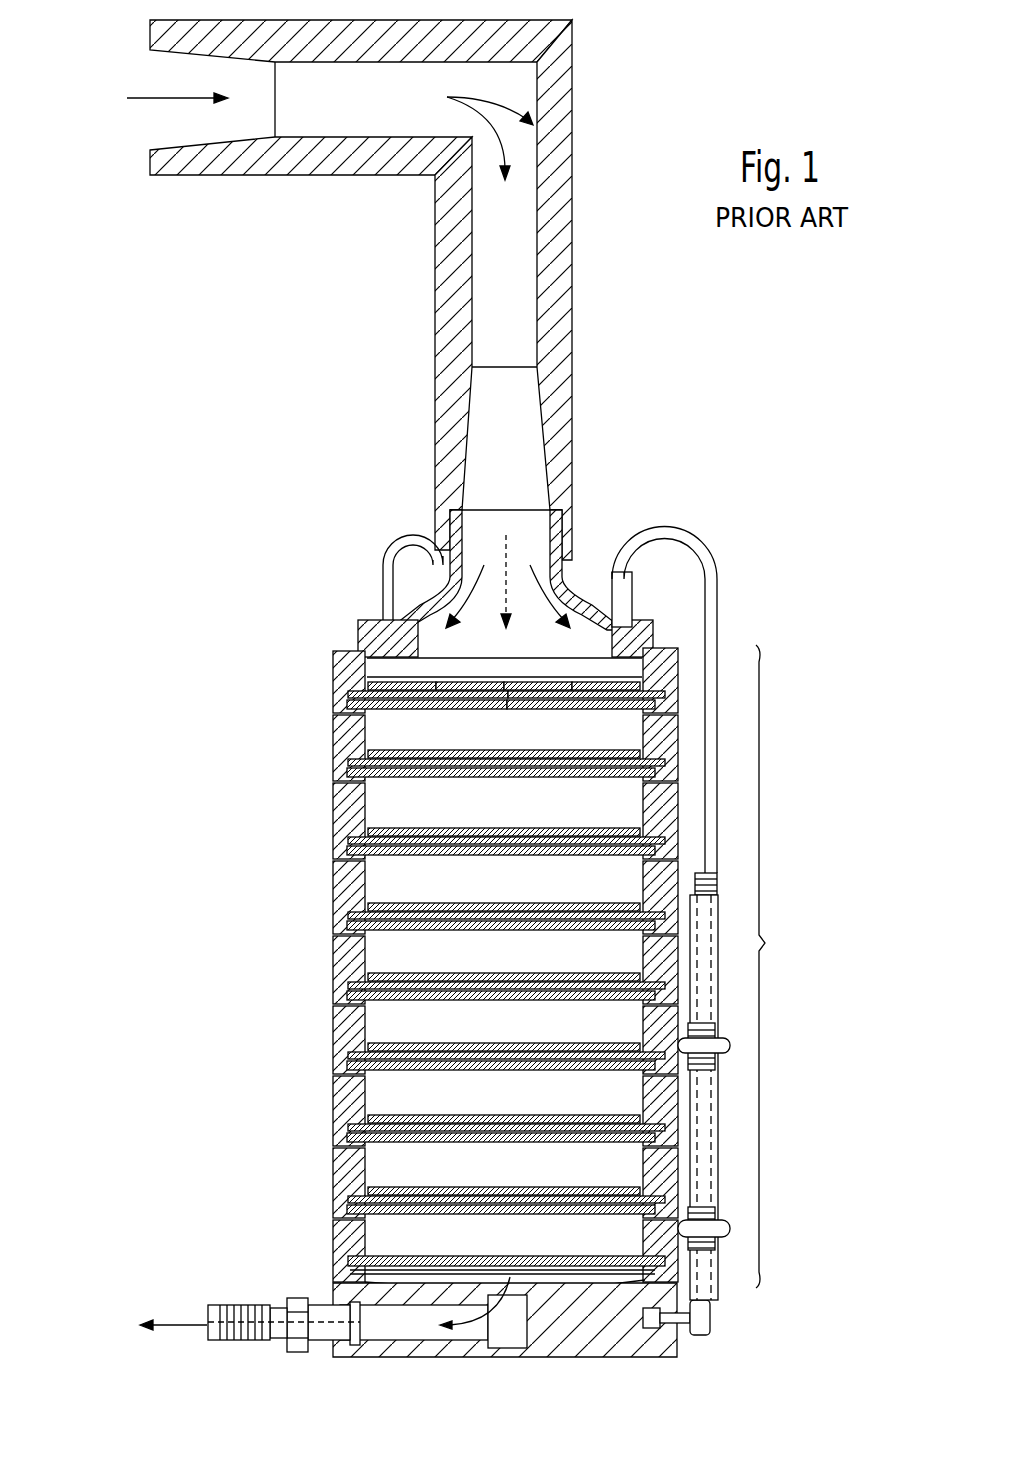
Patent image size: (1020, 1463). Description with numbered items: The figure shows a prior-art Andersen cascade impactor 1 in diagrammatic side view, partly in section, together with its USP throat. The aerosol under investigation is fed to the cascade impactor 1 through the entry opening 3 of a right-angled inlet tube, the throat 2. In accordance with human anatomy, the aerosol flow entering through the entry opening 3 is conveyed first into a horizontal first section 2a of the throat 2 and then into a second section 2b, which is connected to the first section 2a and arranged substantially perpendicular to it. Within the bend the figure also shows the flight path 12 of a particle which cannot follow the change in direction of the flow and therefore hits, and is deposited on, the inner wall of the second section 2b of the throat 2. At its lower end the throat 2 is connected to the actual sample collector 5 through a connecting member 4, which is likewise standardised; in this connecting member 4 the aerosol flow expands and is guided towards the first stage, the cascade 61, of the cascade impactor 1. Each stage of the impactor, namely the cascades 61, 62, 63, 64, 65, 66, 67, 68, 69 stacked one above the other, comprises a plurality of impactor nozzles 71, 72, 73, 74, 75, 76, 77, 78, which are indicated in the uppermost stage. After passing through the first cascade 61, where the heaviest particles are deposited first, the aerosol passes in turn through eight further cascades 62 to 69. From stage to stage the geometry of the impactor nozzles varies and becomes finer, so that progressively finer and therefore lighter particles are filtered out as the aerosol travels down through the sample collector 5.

The Andersen cascade impactor 1 is at (466, 899).
The throat 2 is at (410, 325).
The first section 2a is at (325, 158).
The second section 2b is at (560, 275).
The entry opening 3 is at (149, 112).
The connecting member 4 is at (362, 618).
The sample collector 5 is at (700, 913).
The flight path of a striking particle 12 is at (522, 108).
The cascade 61 is at (338, 671).
The cascade 62 is at (338, 740).
The cascade 63 is at (342, 810).
The cascade 64 is at (340, 880).
The cascade 65 is at (343, 960).
The cascade 66 is at (340, 1021).
The cascade 67 is at (340, 1091).
The cascade 68 is at (340, 1161).
The cascade 69 is at (340, 1236).
The impactor nozzles 71 is at (383, 680).
The impactor nozzles 72 is at (407, 690).
The impactor nozzles 73 is at (430, 680).
The impactor nozzles 74 is at (453, 692).
The impactor nozzles 75 is at (560, 678).
The impactor nozzles 76 is at (577, 696).
The impactor nozzles 77 is at (605, 680).
The impactor nozzles 78 is at (581, 723).